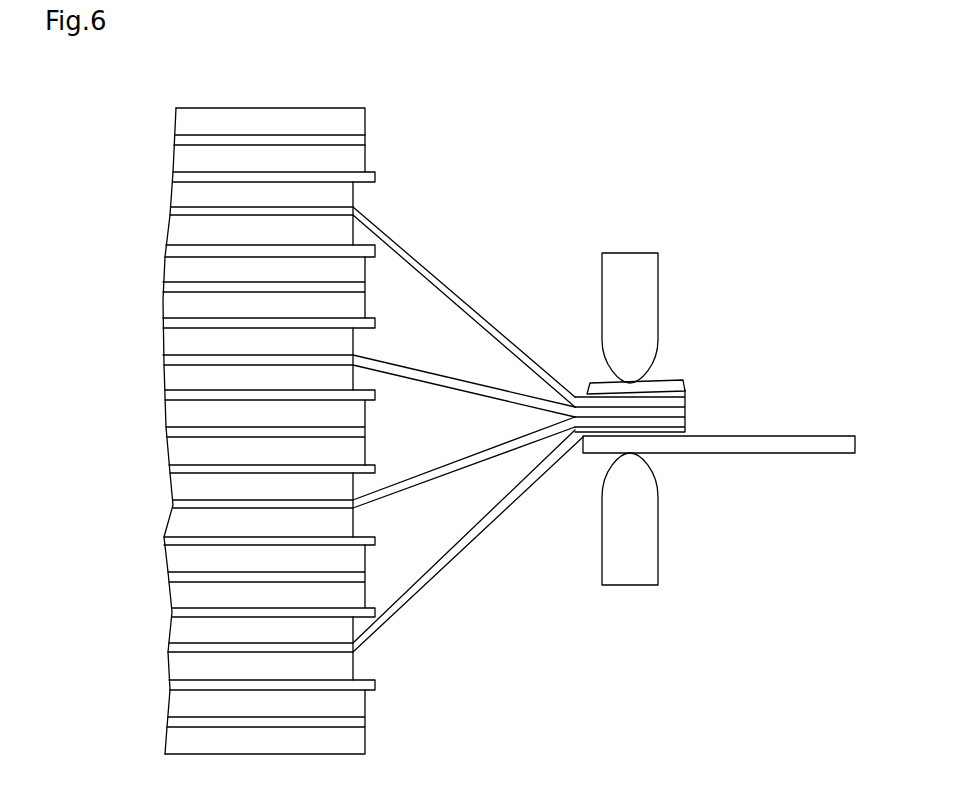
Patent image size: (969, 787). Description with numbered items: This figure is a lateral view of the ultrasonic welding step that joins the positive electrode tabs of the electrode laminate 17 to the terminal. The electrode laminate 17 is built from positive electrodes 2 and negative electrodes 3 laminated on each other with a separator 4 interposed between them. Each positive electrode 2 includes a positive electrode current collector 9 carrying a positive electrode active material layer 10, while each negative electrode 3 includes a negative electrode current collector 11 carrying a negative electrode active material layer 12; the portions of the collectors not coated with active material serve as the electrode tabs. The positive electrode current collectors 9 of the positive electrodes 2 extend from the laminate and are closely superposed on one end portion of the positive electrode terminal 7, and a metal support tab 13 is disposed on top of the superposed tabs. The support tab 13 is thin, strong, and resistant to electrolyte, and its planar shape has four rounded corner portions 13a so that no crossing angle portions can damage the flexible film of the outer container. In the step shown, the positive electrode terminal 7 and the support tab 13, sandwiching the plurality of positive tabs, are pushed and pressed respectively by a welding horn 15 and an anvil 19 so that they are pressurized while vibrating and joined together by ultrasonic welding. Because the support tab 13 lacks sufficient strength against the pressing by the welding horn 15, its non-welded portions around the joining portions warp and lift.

The positive electrode 2 is at (154, 222).
The negative electrode 3 is at (103, 75).
The separator 4 is at (177, 177).
The positive electrode terminal 7 is at (763, 456).
The positive electrode current collector 9 is at (483, 517).
The positive electrode active material layer 10 is at (332, 236).
The negative electrode current collector 11 is at (177, 141).
The negative electrode active material layer 12 is at (177, 121).
The support tab 13 is at (644, 388).
The corner portion 13a is at (584, 380).
The welding horn 15 is at (647, 277).
The electrode laminate 17 is at (298, 86).
The anvil 19 is at (648, 552).